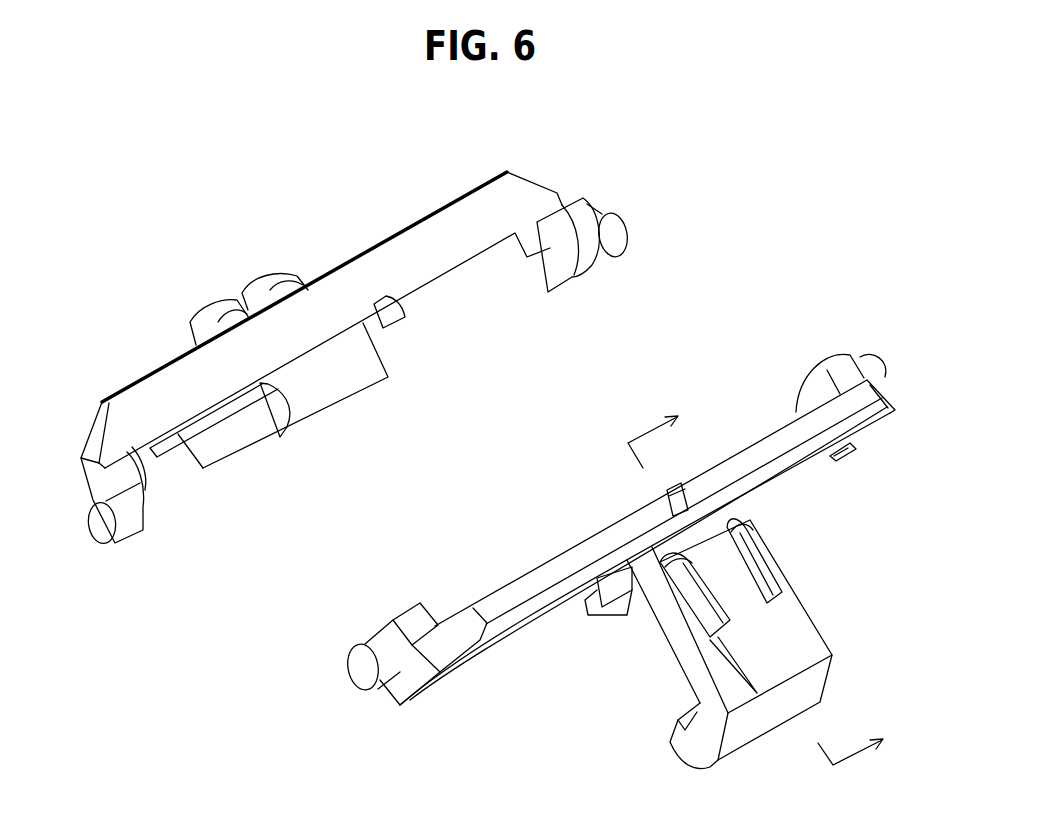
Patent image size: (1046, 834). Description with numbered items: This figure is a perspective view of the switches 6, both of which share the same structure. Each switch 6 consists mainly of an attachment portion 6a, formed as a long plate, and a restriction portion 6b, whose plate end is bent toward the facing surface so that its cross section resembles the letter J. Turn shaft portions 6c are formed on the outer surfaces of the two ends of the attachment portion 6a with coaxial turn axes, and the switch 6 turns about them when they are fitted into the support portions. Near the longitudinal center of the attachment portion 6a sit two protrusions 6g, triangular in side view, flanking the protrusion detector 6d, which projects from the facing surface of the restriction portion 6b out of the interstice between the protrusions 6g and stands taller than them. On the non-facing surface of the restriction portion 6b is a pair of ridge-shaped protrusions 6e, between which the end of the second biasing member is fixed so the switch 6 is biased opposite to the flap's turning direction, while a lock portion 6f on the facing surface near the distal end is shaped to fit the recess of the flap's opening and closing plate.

The switch 6 is at (542, 153).
The attachment portion 6a is at (395, 232).
The restriction portion 6b is at (182, 453).
The turn shaft portion 6c is at (627, 225).
The protrusion detector 6d is at (360, 378).
The ridge-shaped protrusion 6e is at (787, 573).
The lock portion 6f is at (672, 704).
The protrusion 6g is at (405, 310).